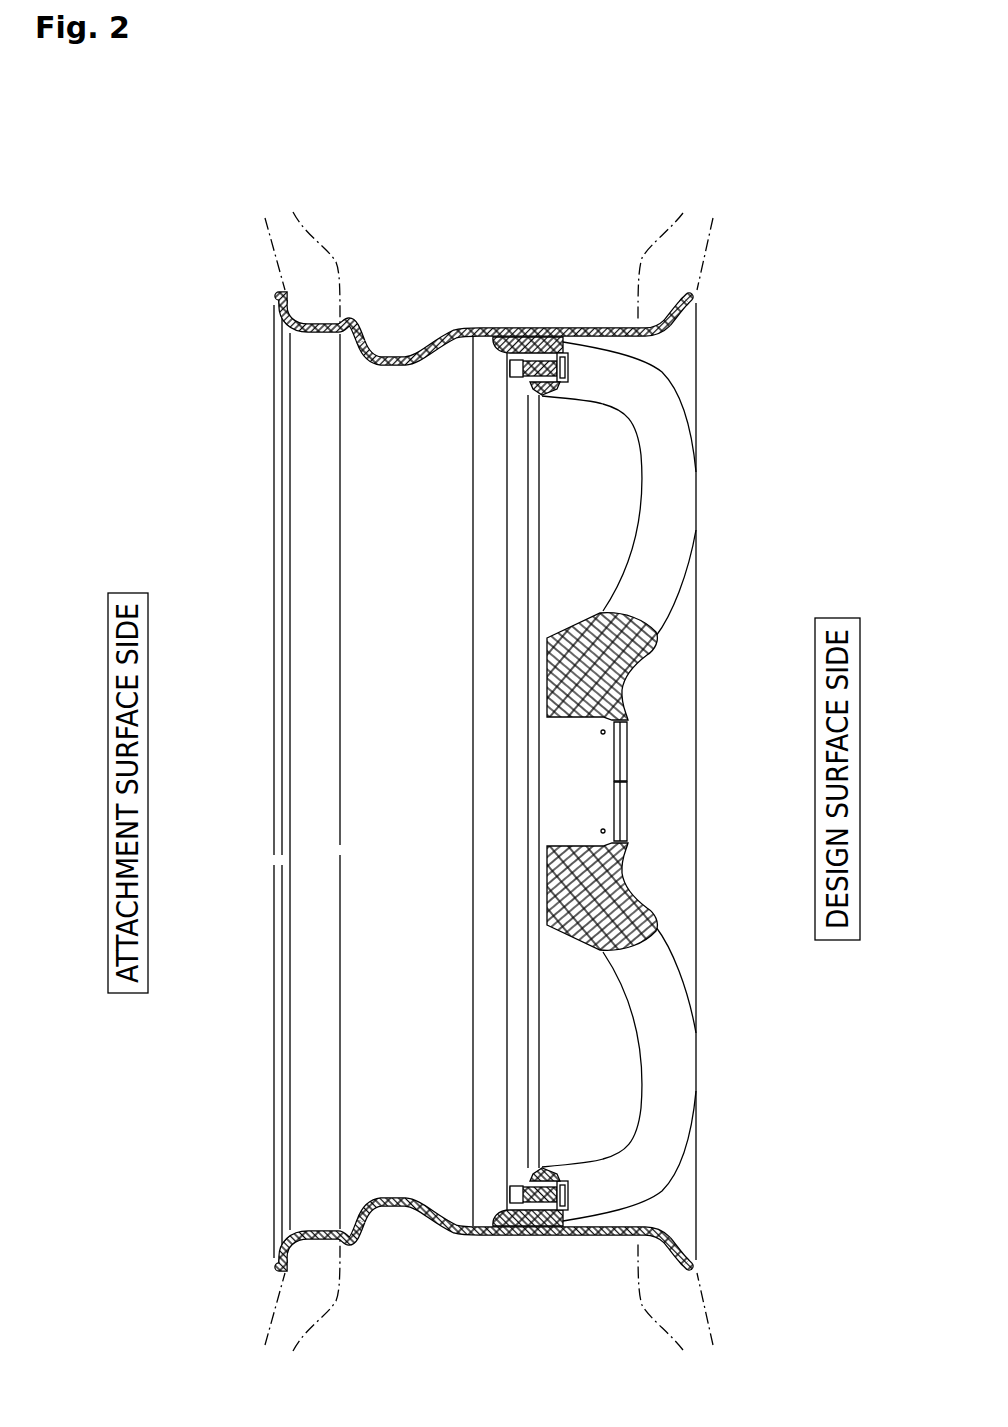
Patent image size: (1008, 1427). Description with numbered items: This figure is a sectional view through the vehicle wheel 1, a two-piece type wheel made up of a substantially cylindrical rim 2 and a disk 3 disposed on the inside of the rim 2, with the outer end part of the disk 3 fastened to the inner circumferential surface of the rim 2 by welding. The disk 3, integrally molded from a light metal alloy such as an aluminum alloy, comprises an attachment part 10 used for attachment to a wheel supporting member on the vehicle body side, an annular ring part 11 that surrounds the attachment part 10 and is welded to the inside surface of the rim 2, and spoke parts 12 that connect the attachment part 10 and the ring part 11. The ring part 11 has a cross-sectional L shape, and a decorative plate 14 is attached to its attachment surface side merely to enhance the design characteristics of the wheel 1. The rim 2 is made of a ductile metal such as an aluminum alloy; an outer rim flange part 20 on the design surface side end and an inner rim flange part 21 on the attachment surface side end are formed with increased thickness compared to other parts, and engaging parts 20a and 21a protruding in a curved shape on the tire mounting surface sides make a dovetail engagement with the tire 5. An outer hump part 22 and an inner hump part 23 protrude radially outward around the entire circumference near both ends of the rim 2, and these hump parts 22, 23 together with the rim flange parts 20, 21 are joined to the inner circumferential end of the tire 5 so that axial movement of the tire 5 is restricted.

The vehicle wheel 1 is at (820, 282).
The rim 2 is at (495, 316).
The disk 3 is at (710, 460).
The tire 5 is at (710, 240).
The attachment part 10 is at (607, 703).
The ring part 11 is at (530, 333).
The spoke part 12 is at (673, 523).
The decorative plate 14 is at (528, 393).
The outer rim flange part 20 is at (687, 317).
The engaging part 20a is at (677, 297).
The inner rim flange part 21 is at (276, 307).
The engaging part 21a is at (287, 294).
The outer hump part 22 is at (633, 327).
The inner hump part 23 is at (350, 318).